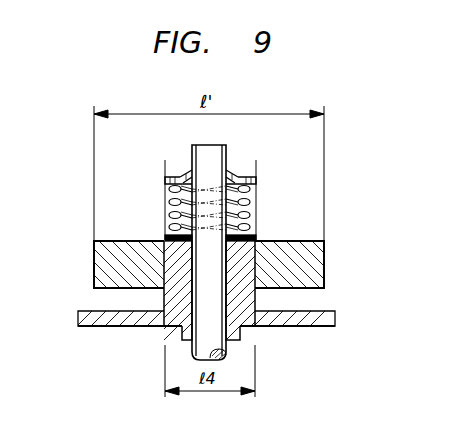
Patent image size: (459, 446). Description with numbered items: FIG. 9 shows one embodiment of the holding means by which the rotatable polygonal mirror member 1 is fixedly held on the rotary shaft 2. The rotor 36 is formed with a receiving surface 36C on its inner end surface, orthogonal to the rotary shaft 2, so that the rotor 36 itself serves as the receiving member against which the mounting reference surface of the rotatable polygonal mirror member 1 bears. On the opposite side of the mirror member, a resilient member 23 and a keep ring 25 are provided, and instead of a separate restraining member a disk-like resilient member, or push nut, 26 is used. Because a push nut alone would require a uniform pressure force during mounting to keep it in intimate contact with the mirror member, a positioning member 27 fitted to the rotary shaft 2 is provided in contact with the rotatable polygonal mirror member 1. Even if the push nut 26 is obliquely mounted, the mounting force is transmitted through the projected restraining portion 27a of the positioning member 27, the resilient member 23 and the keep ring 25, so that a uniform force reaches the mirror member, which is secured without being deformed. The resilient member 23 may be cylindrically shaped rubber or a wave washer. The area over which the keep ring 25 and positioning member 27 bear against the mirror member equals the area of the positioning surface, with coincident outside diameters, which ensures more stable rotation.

The rotatable polygonal mirror member 1 is at (112, 243).
The rotary shaft 2 is at (212, 149).
The resilient member 23 is at (166, 212).
The keep ring 25 is at (256, 237).
The disk-like resilient member (push nut) 26 is at (232, 170).
The positioning member 27 is at (251, 202).
The projected restraining portion 27a is at (256, 183).
The rotor 36 is at (320, 311).
The receiving surface 36C is at (240, 287).